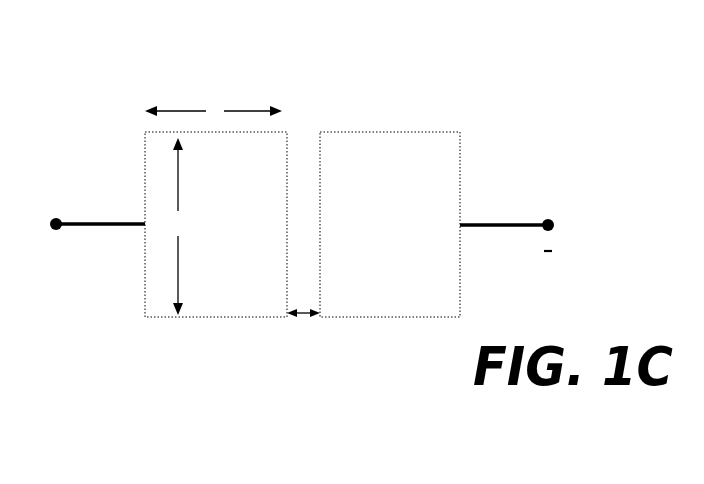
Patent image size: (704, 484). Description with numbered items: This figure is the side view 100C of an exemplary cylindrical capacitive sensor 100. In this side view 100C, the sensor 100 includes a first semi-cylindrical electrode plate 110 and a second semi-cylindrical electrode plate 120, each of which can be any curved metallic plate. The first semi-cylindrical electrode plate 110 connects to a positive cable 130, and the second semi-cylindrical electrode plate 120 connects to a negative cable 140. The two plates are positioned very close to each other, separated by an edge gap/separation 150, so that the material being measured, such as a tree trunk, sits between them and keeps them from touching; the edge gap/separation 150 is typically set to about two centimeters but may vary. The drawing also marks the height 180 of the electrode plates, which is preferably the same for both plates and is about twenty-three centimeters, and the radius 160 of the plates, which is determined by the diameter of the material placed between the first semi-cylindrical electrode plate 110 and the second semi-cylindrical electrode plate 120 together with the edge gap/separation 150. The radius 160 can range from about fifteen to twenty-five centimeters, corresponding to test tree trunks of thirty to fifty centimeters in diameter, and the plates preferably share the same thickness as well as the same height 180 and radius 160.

The cylindrical capacitive sensor 100 is at (317, 209).
The side view 100C is at (281, 402).
The first semi-cylindrical electrode plate 110 is at (226, 236).
The second semi-cylindrical electrode plate 120 is at (342, 236).
The positive cable 130 is at (79, 217).
The negative cable 140 is at (495, 217).
The edge gap/separation 150 is at (289, 293).
The radius 160 is at (177, 109).
The height 180 is at (177, 197).